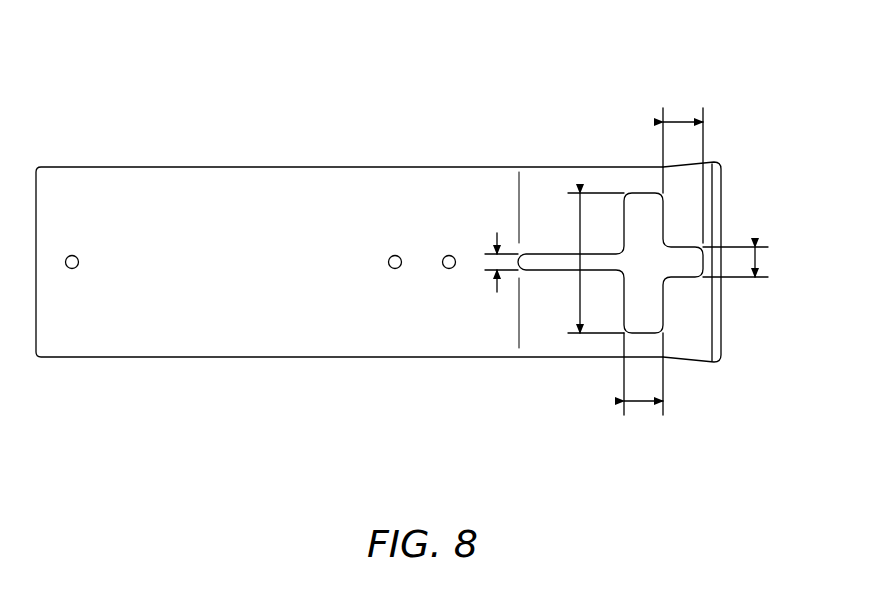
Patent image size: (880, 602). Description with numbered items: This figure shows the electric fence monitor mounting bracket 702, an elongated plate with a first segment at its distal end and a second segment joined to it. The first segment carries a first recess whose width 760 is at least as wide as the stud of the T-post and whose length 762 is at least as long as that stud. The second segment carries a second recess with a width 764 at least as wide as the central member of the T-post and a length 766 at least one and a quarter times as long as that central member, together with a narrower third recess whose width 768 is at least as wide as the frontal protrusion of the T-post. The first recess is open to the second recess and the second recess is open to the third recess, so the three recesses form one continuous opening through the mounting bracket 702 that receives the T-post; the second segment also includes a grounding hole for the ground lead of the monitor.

The mounting bracket 702 is at (209, 80).
The width of the first recess 760 is at (758, 262).
The length of the first recess 762 is at (680, 118).
The width of the second recess 764 is at (580, 292).
The length of the second recess 766 is at (644, 405).
The width of the third recess 768 is at (493, 283).